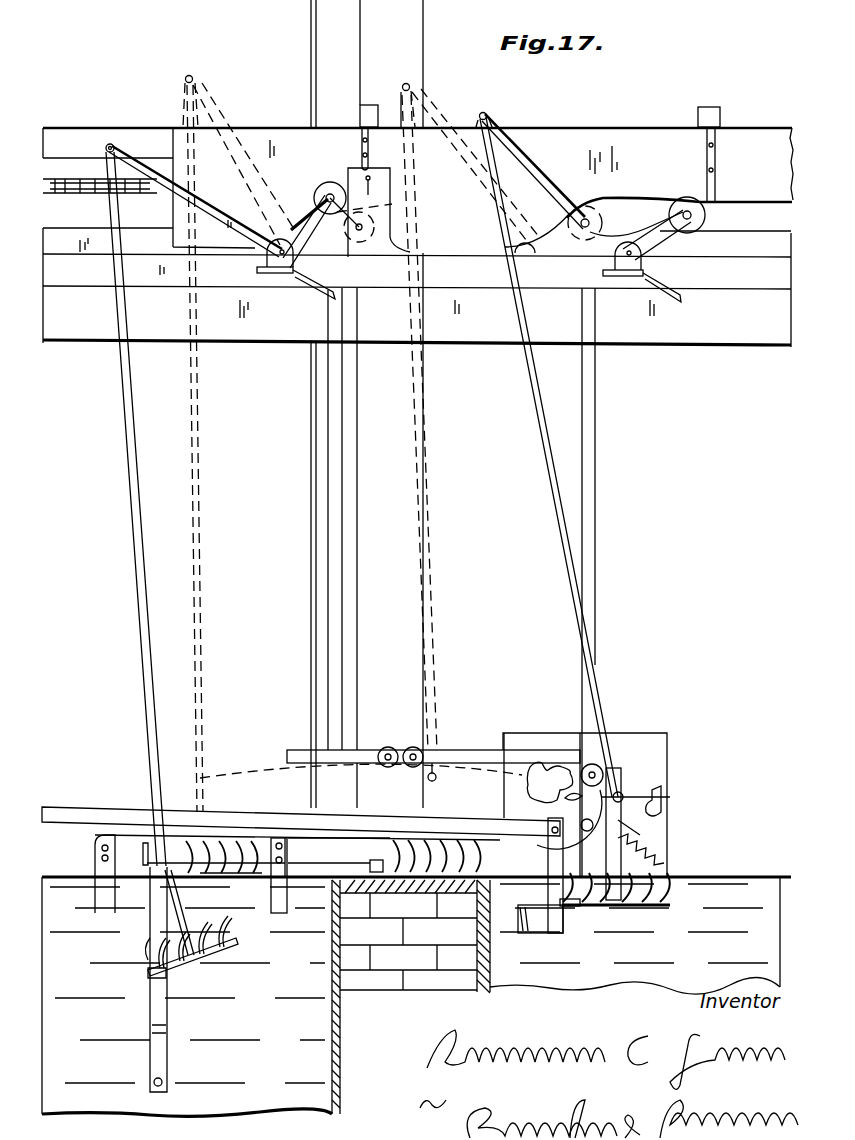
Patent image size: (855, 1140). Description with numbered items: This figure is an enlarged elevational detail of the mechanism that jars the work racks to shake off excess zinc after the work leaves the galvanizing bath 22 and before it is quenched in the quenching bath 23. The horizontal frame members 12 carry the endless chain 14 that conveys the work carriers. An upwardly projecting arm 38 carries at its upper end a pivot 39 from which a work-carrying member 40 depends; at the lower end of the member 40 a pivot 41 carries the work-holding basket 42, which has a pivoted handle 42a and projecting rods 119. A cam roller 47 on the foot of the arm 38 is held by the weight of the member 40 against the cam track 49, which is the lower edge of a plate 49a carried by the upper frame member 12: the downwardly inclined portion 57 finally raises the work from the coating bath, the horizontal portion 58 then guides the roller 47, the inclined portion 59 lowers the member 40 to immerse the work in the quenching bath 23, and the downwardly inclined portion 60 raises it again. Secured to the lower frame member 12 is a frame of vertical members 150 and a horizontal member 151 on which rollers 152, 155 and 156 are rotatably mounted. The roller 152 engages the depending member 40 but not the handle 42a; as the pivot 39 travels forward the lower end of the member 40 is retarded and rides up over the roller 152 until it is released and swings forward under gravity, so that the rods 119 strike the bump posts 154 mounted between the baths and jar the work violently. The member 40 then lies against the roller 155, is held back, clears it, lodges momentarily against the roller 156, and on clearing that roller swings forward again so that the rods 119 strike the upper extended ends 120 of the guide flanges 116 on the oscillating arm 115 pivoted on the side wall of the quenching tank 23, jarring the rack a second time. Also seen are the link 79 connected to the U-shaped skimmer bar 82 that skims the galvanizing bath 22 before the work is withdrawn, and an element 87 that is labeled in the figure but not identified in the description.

The horizontal frame member 12 is at (74, 132).
The endless chain 14 is at (96, 193).
The galvanizing bath 22 is at (694, 880).
The quenching bath 23 is at (272, 1074).
The upwardly projecting arm 38 is at (222, 112).
The pivot 39 is at (113, 145).
The work-carrying member 40 is at (121, 386).
The basket pivot 41 is at (168, 862).
The work-holding basket 42 is at (215, 957).
The pivoted handle 42a is at (637, 847).
The cam roller 47 is at (336, 190).
The cam track 49 is at (777, 202).
The cam plate 49a is at (745, 138).
The downwardly inclined track portion 57 is at (557, 231).
The horizontal track portion 58 is at (489, 255).
The inclined track portion 59 is at (391, 208).
The downwardly inclined track portion 60 is at (311, 206).
The link 79 is at (88, 810).
The skimmer bar 82 is at (516, 928).
The shaft 87 is at (662, 778).
The oscillating arm 115 is at (167, 1016).
The guide flange 116 is at (150, 926).
The projecting rod 119 is at (148, 977).
The upper extended flange end 120 is at (100, 852).
The vertical frame member 150 is at (343, 421).
The horizontal frame member 151 is at (461, 749).
The roller 152 is at (611, 742).
The bump post 154 is at (376, 866).
The roller 155 is at (412, 747).
The roller 156 is at (387, 747).